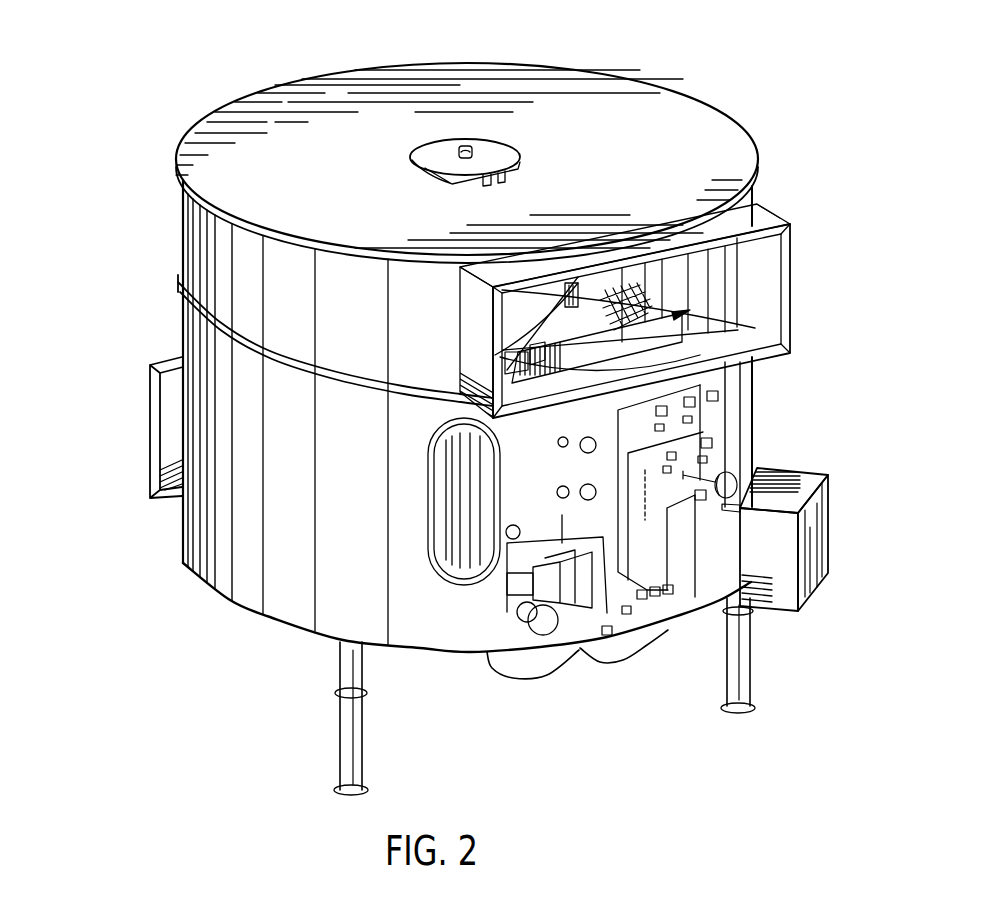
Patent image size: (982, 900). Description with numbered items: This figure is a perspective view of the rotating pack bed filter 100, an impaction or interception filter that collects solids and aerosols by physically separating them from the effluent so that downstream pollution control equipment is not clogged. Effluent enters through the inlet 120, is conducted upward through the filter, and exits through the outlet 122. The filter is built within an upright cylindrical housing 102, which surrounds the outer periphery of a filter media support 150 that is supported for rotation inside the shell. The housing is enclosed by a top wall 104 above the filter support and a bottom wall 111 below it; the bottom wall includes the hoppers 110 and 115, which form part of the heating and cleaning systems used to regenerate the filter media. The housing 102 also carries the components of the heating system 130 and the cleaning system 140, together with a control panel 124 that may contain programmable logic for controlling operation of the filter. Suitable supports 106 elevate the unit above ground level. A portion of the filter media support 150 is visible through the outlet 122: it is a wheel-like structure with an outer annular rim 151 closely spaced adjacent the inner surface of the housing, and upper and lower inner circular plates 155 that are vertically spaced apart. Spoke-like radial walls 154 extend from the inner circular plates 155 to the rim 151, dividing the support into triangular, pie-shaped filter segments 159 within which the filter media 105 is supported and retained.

The rotating pack bed filter 100 is at (183, 247).
The housing 102 is at (180, 335).
The top wall 104 is at (705, 124).
The filter media 105 is at (783, 249).
The supports 106 is at (360, 763).
The hopper 110 is at (490, 668).
The bottom wall 111 is at (226, 622).
The hopper 115 is at (633, 663).
The inlet 120 is at (147, 428).
The outlet 122 is at (793, 293).
The control panel 124 is at (822, 590).
The heating system 130 is at (503, 585).
The cleaning system 140 is at (722, 412).
The filter media support 150 is at (780, 338).
The rim 151 is at (637, 303).
The radial walls 154 is at (565, 300).
The inner circular plates 155 is at (502, 353).
The filter segments 159 is at (500, 302).